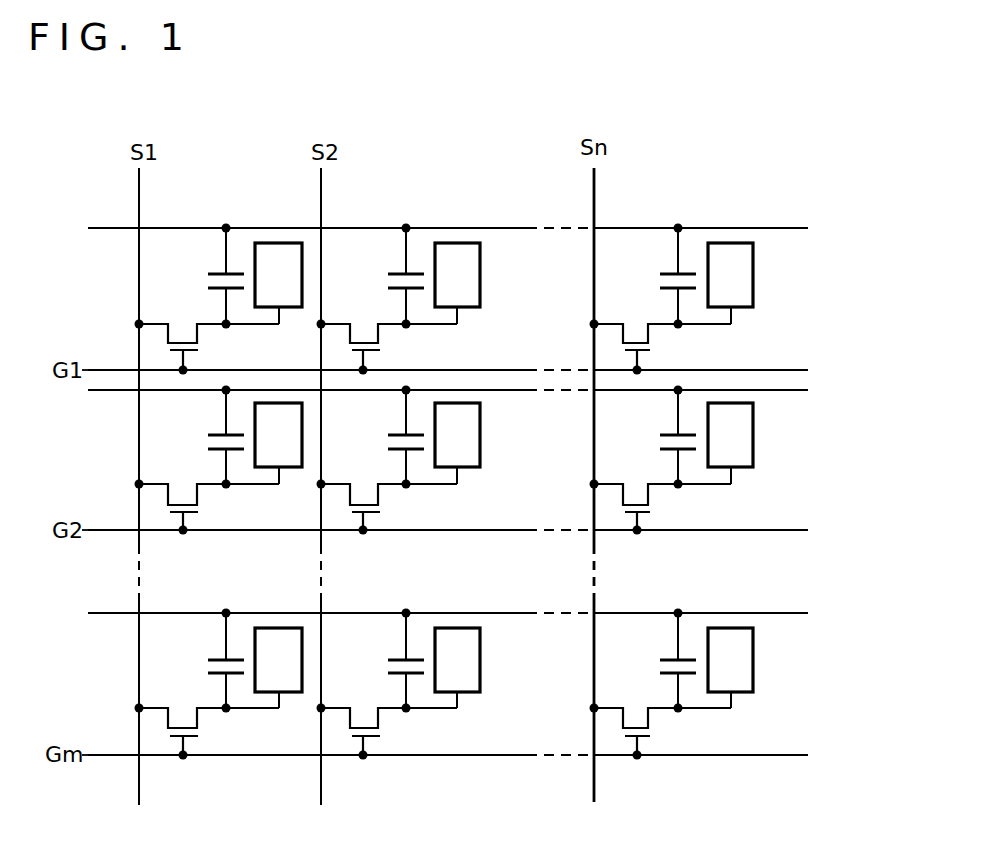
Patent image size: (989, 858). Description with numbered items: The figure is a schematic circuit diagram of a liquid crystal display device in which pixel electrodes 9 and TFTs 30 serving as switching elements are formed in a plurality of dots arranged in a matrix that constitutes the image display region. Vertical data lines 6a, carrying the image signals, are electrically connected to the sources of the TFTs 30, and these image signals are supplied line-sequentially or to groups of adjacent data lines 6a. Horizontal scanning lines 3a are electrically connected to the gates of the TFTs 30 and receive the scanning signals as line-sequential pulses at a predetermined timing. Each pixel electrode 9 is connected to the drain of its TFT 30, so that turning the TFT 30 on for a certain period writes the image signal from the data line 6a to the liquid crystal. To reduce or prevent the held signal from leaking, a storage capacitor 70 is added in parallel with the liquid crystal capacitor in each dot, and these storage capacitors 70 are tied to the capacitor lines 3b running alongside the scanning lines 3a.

The data line 6a is at (142, 202).
The capacitor line 3b is at (772, 228).
The scanning line 3a is at (760, 370).
The storage capacitor 70 is at (198, 282).
The pixel electrode 9 is at (466, 308).
The TFT 30 is at (198, 338).